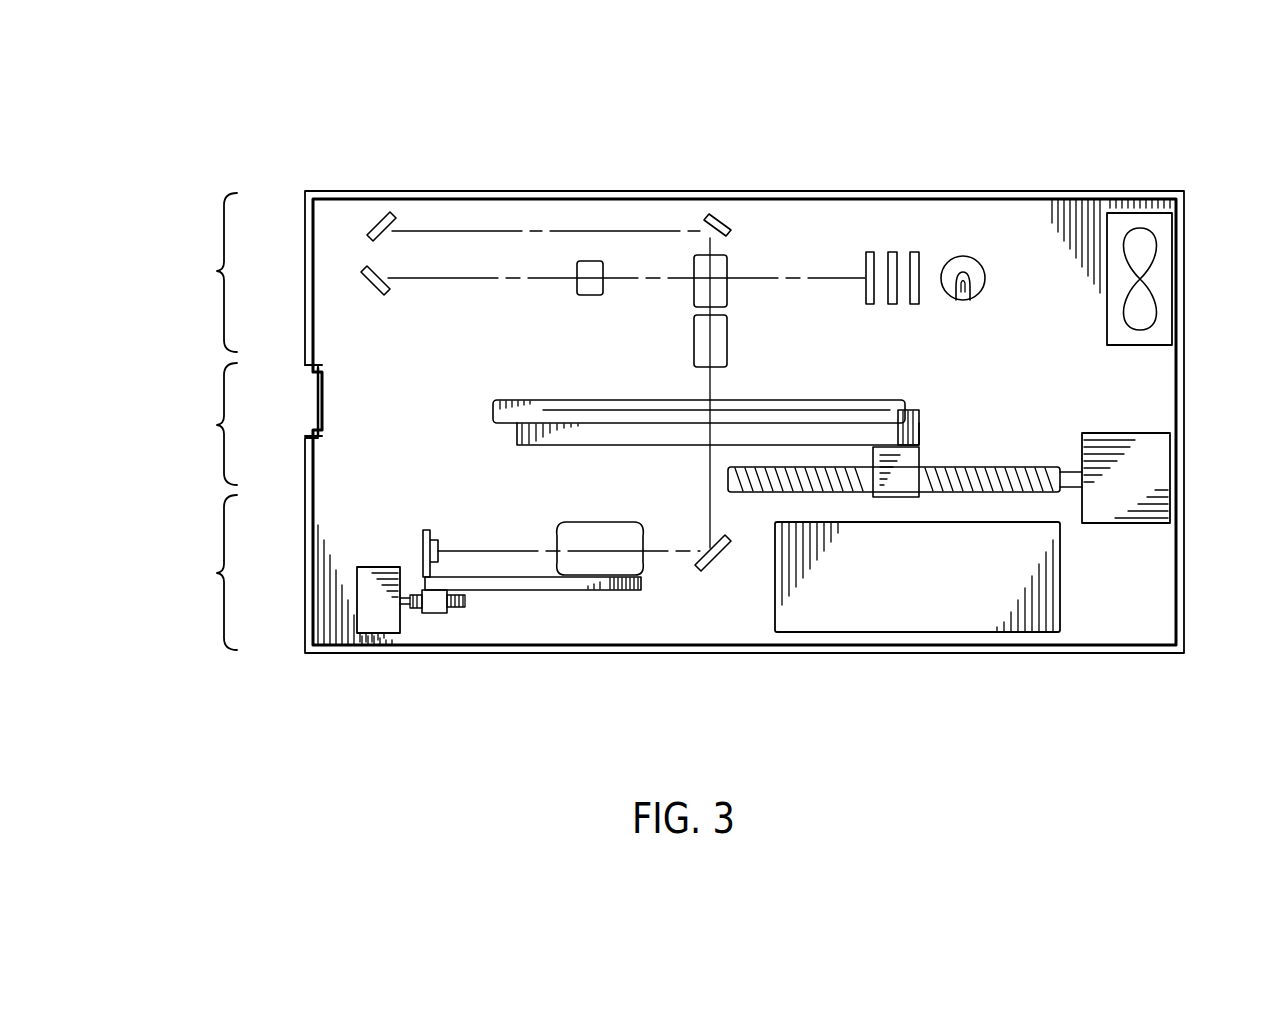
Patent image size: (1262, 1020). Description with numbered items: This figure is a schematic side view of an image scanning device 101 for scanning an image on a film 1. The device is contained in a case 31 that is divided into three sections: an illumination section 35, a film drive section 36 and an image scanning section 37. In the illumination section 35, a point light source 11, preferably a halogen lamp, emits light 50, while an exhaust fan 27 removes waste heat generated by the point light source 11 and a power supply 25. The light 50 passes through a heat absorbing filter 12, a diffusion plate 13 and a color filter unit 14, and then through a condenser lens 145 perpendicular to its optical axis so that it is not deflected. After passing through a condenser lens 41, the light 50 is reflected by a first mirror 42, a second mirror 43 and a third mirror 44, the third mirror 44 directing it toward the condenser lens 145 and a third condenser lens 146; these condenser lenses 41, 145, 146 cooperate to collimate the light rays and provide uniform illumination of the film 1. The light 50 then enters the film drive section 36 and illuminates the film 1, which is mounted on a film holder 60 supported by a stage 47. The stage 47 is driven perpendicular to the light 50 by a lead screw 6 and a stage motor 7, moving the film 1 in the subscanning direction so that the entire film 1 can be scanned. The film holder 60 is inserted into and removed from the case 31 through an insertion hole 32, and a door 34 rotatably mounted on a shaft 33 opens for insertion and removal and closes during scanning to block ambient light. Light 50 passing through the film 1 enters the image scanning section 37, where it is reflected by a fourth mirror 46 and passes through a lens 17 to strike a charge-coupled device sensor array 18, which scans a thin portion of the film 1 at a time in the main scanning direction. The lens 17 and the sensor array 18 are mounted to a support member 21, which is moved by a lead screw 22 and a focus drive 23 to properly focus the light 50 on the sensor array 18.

The image scanning device 101 is at (250, 142).
The case 31 is at (483, 192).
The illumination section 35 is at (209, 272).
The film drive section 36 is at (207, 424).
The image scanning section 37 is at (208, 572).
The shaft 33 is at (318, 374).
The door 34 is at (315, 405).
The insertion hole 32 is at (312, 428).
The light 50 is at (842, 280).
The second mirror 43 is at (374, 222).
The first mirror 42 is at (372, 285).
The third mirror 44 is at (718, 222).
The fourth mirror 46 is at (722, 562).
The condenser lens 41 is at (590, 261).
The condenser lens 145 is at (728, 268).
The third condenser lens 146 is at (728, 328).
The color filter unit 14 is at (870, 252).
The diffusion plate 13 is at (892, 252).
The heat absorbing filter 12 is at (915, 252).
The point light source 11 is at (963, 256).
The exhaust fan 27 is at (1148, 245).
The film 1 is at (878, 408).
The film holder 60 is at (893, 412).
The stage 47 is at (918, 432).
The lead screw 6 is at (1021, 466).
The stage motor 7 is at (1168, 455).
The power supply 25 is at (938, 632).
The focus drive 23 is at (381, 633).
The lead screw 22 is at (455, 613).
The charge-coupled device sensor array 18 is at (440, 540).
The support member 21 is at (545, 590).
The lens 17 is at (617, 575).